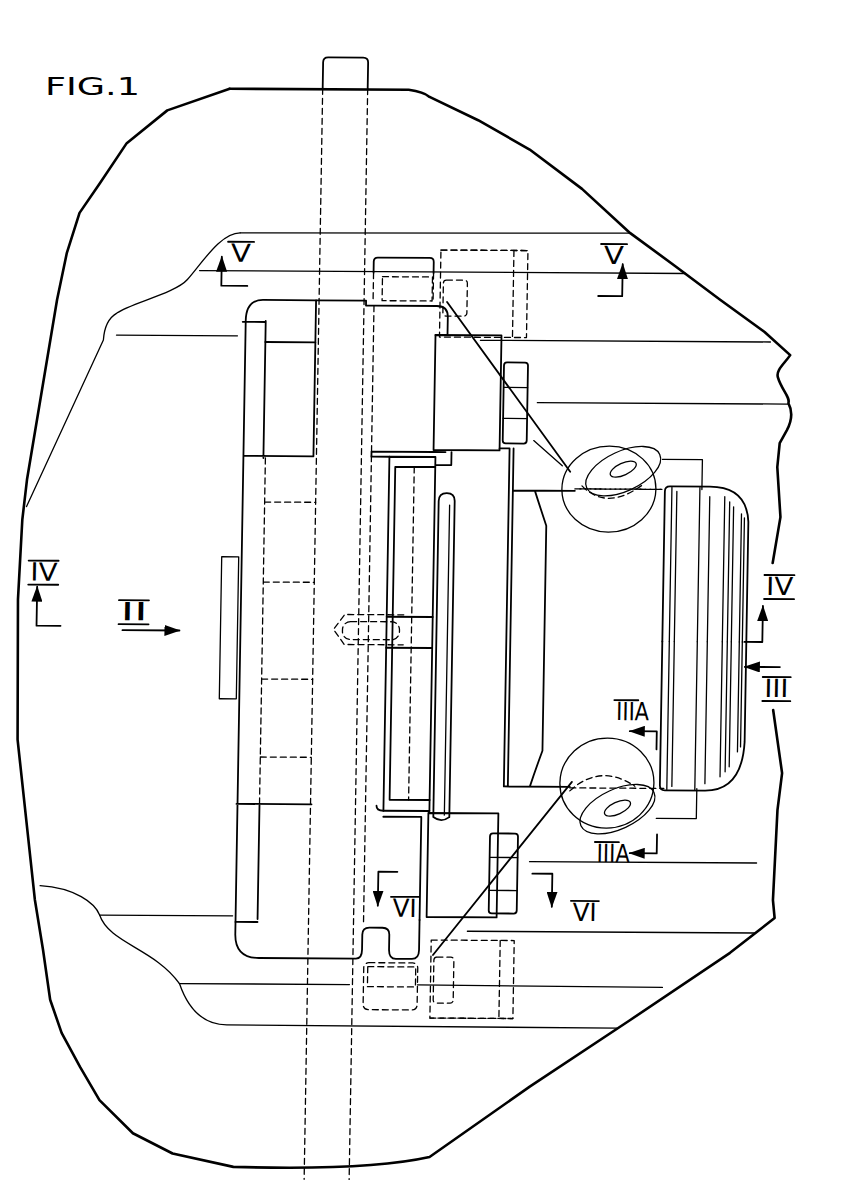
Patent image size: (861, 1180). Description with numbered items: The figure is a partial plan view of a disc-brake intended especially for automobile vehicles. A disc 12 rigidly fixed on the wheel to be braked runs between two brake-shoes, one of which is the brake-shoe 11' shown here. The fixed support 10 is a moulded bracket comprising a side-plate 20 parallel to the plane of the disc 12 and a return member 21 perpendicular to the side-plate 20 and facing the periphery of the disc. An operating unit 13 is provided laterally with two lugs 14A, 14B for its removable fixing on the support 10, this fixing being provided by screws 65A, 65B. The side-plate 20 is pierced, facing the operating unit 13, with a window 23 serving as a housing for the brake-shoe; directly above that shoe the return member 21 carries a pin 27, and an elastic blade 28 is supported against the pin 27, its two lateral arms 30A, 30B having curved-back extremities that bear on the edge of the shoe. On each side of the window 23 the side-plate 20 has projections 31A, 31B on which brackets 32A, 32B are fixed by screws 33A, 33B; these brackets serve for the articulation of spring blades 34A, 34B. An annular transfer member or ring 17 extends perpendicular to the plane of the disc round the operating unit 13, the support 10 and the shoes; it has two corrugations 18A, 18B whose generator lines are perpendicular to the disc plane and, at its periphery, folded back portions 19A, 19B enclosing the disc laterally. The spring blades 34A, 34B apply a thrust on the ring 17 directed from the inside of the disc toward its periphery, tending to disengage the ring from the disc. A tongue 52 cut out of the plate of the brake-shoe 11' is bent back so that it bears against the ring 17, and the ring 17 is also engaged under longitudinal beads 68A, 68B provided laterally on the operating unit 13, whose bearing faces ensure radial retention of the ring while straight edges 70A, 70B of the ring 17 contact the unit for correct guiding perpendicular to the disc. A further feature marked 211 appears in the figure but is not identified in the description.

The fixed support 10 is at (433, 396).
The brake-shoe 11' is at (290, 321).
The disc 12 is at (361, 67).
The operating unit 13 is at (597, 641).
The lug 14A is at (474, 403).
The lug 14B is at (498, 912).
The annular transfer member or ring 17 is at (96, 205).
The corrugation 18A is at (697, 321).
The corrugation 18B is at (678, 975).
The folded back portion 19A is at (172, 176).
The folded back portion 19B is at (187, 1105).
The side-plate 20 is at (379, 368).
The return member 21 is at (272, 540).
The housing corner / abutment 211 is at (439, 450).
The window 23 is at (377, 818).
The pin 27 is at (427, 632).
The elastic blade 28 is at (422, 685).
The lateral arm 30A is at (430, 485).
The lateral arm 30B is at (420, 777).
The projection 31A is at (383, 252).
The projection 31B is at (387, 1012).
The bracket 32A is at (444, 247).
The bracket 32B is at (444, 1022).
The screw 33A is at (462, 302).
The screw 33B is at (459, 983).
The spring blade 34A is at (464, 240).
The spring blade 34B is at (482, 1030).
The tongue 52 is at (224, 576).
The screw 65A is at (572, 505).
The screw 65B is at (520, 790).
The longitudinal bead 68A is at (705, 463).
The longitudinal bead 68B is at (701, 820).
The straight edge 70A is at (651, 466).
The straight edge 70B is at (660, 816).